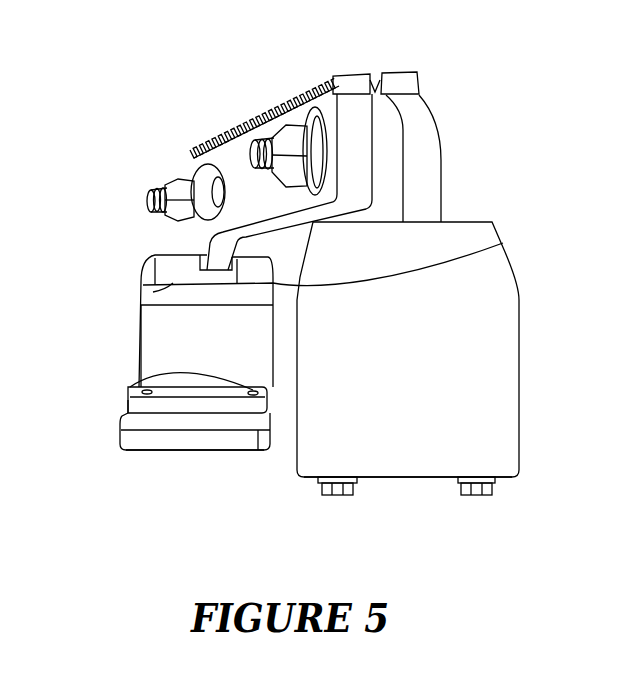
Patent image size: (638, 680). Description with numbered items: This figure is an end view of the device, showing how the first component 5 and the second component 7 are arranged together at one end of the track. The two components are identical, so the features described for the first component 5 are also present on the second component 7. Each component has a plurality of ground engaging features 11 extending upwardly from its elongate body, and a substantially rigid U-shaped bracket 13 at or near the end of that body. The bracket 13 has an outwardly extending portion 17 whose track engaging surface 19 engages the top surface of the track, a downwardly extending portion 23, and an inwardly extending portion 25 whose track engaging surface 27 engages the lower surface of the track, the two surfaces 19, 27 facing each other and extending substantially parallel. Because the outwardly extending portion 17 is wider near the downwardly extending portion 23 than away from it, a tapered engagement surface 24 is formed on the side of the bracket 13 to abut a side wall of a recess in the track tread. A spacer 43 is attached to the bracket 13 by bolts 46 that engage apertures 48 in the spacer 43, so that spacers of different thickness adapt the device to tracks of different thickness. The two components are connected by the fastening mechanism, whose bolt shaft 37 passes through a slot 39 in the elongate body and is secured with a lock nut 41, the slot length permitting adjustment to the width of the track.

The first component 5 is at (160, 303).
The second component 7 is at (445, 150).
The ground engaging features 11 is at (345, 84).
The U-shaped bracket 13 is at (160, 336).
The outwardly extending portion 17 is at (167, 253).
The track engaging surface 19 is at (165, 288).
The downwardly extending portion 23 is at (395, 450).
The tapered engagement surface 24 is at (142, 272).
The inwardly extending portion 25 is at (167, 450).
The track engaging surface 27 is at (143, 418).
The shaft 37 is at (158, 197).
The second slot 39 is at (212, 178).
The nut 41 is at (165, 183).
The spacer 43 is at (137, 400).
The bolt 46 is at (330, 495).
The aperture 48 is at (160, 381).